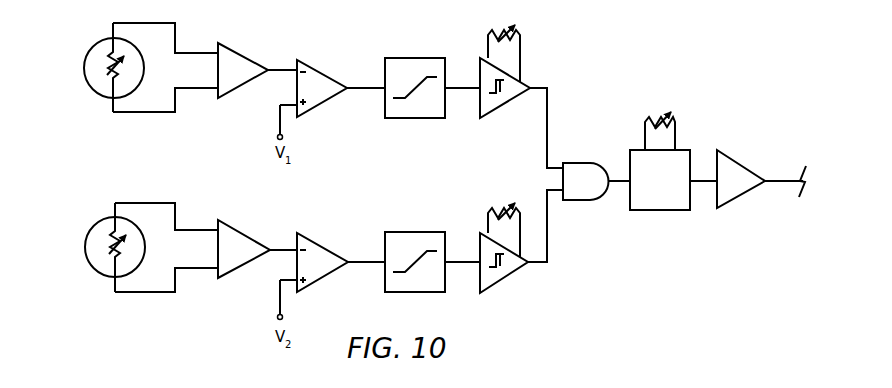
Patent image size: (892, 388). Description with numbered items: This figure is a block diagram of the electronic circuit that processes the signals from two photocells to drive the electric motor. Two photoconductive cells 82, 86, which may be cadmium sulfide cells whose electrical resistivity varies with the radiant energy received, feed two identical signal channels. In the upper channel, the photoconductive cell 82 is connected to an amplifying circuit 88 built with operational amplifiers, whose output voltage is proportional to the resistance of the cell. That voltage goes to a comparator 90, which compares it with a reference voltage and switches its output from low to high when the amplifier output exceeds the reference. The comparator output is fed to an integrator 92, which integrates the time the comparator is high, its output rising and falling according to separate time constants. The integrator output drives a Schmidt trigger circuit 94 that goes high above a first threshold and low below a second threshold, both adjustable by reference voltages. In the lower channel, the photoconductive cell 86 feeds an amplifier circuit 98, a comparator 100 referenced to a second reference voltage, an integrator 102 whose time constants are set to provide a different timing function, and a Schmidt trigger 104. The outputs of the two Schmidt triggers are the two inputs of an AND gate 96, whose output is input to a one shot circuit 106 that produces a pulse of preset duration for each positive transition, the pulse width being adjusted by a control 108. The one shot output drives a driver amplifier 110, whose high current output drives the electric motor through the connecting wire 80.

The connecting wire 80 is at (793, 177).
The photoconductive cell 82 is at (92, 38).
The photoconductive cell 86 is at (96, 217).
The amplifying circuit 88 is at (232, 52).
The comparator 90 is at (320, 72).
The integrator 92 is at (405, 60).
The Schmidt trigger circuit 94 is at (497, 103).
The AND gate 96 is at (573, 163).
The amplifier circuit 98 is at (232, 228).
The comparator 100 is at (320, 252).
The integrator 102 is at (405, 233).
The Schmidt trigger 104 is at (497, 280).
The one shot circuit 106 is at (687, 150).
The control 108 is at (642, 122).
The driver amplifier 110 is at (730, 199).